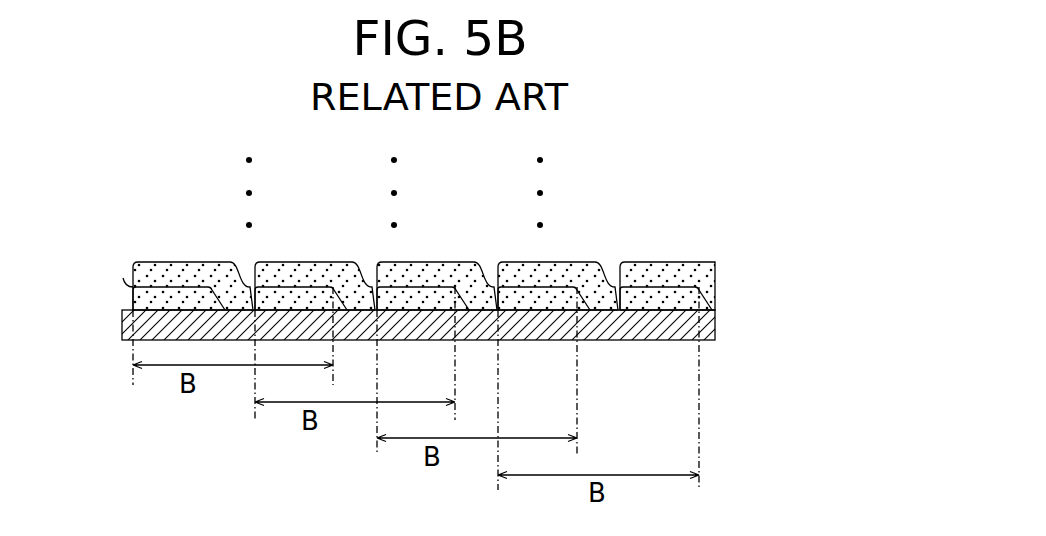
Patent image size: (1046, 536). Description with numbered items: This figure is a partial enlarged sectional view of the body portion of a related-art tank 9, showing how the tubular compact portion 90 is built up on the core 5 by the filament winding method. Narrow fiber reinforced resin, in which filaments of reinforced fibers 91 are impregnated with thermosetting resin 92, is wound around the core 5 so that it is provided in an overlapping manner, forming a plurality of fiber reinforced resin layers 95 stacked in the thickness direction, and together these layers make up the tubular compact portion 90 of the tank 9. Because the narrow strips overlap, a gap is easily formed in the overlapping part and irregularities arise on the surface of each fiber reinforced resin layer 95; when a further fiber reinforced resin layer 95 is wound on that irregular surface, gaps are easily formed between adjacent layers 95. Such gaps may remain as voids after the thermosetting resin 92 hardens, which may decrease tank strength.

The substrate 5 is at (448, 324).
The light-emitting element structure (related art) 9 is at (467, 245).
The tubular compact portion 90 is at (450, 229).
The reinforced fibers 91 is at (323, 278).
The thermosetting resin 92 is at (298, 272).
The fiber reinforced resin layer 95 is at (177, 270).